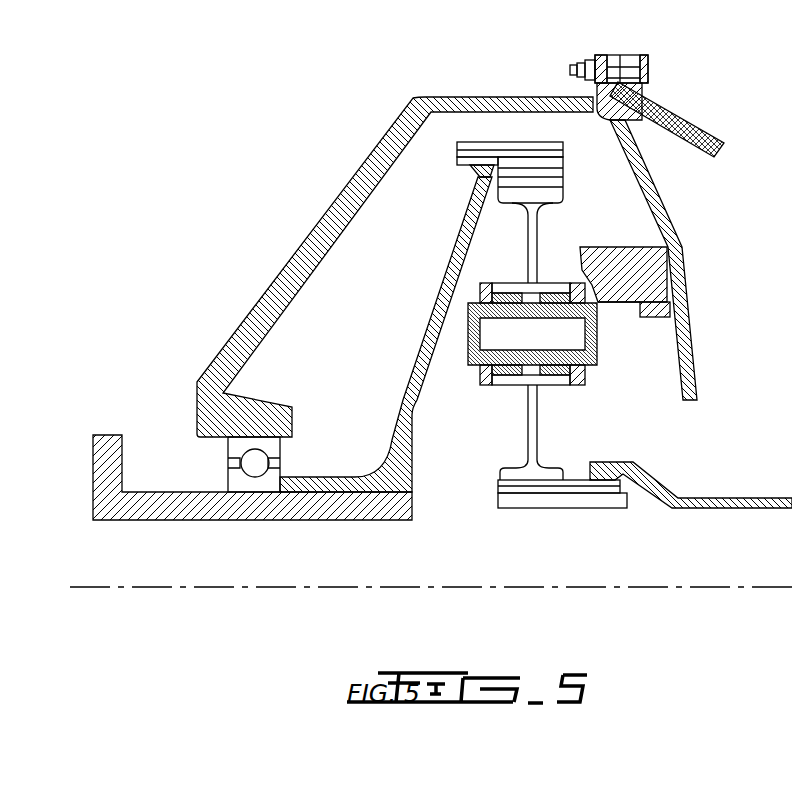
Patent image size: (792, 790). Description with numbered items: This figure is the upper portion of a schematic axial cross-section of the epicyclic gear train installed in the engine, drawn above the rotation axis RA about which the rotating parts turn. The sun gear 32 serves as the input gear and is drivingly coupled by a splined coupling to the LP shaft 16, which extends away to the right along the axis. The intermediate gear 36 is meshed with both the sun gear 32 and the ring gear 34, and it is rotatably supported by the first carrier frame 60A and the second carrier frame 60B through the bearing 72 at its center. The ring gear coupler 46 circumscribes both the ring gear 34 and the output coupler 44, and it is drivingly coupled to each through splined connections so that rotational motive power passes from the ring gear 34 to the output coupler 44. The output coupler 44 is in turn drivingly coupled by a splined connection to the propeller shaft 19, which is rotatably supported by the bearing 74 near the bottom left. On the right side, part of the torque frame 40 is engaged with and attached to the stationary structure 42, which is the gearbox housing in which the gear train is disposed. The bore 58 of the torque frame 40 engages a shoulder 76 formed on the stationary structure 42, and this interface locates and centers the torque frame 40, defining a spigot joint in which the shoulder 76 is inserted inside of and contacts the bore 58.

The LP shaft 16 is at (747, 500).
The propeller shaft 19 is at (168, 492).
The sun gear 32 is at (505, 508).
The ring gear 34 is at (553, 172).
The intermediate gear 36 is at (552, 229).
The torque frame 40 is at (682, 278).
The stationary structure 42 is at (643, 182).
The output coupler 44 is at (420, 345).
The ring gear coupler 46 is at (512, 142).
The bore 58 is at (648, 318).
The first carrier frame 60A is at (486, 290).
The second carrier frame 60B is at (578, 388).
The bearing 72 is at (540, 378).
The bearing 74 is at (257, 463).
The shoulder 76 is at (670, 308).
The rotation axis RA is at (180, 597).